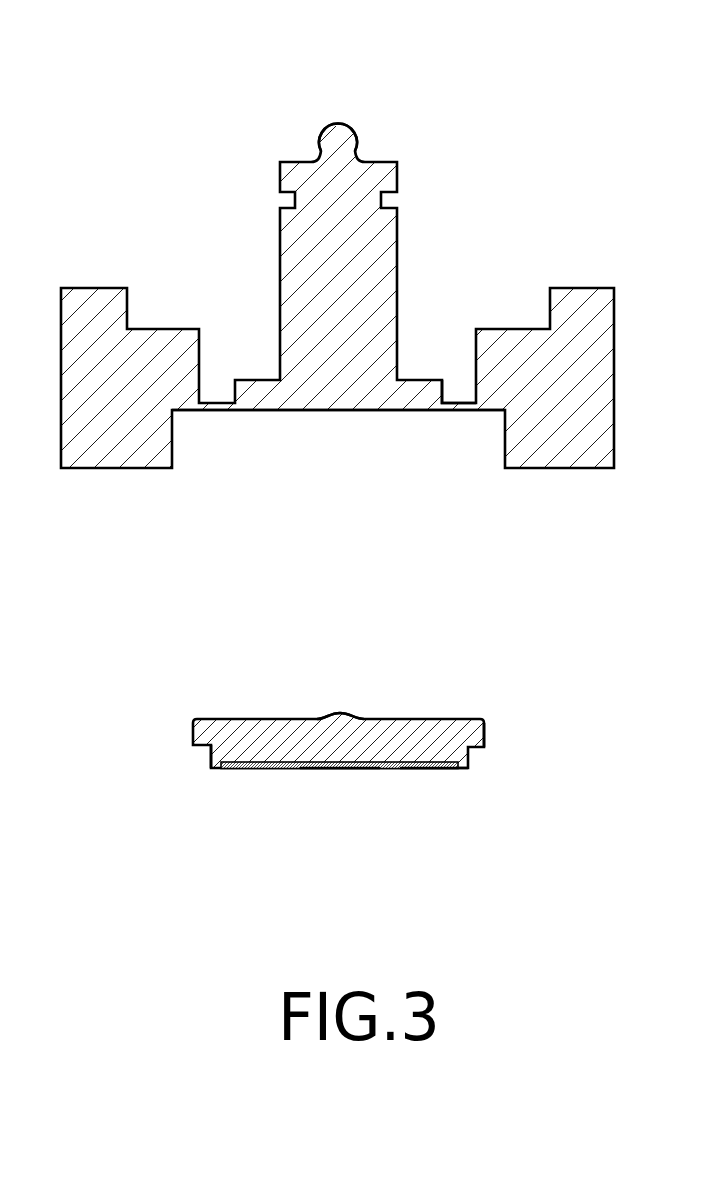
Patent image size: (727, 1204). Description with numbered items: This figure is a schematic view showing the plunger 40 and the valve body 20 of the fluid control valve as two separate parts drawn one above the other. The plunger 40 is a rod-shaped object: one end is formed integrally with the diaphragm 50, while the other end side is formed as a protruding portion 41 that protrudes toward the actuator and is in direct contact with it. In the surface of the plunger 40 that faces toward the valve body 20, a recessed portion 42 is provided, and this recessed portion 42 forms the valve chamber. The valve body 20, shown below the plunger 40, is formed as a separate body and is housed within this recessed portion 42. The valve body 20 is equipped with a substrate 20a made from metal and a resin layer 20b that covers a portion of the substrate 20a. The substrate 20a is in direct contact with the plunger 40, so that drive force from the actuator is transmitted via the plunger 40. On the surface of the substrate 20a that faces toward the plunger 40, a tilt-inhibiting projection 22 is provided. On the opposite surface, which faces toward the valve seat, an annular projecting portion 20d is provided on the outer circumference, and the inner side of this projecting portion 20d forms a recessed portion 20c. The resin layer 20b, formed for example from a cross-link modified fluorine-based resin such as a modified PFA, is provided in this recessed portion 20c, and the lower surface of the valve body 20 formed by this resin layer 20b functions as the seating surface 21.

The plunger 40 is at (133, 123).
The protruding portion 41 is at (338, 125).
The recessed portion 42 is at (331, 442).
The diaphragm 50 is at (459, 402).
The valve body 20 is at (135, 708).
The seating surface 21 is at (272, 770).
The tilt-inhibiting projection 22 is at (338, 710).
The substrate 20a is at (487, 733).
The resin layer 20b is at (422, 770).
The recessed portion 20c is at (342, 770).
The annular projecting portion 20d is at (216, 770).